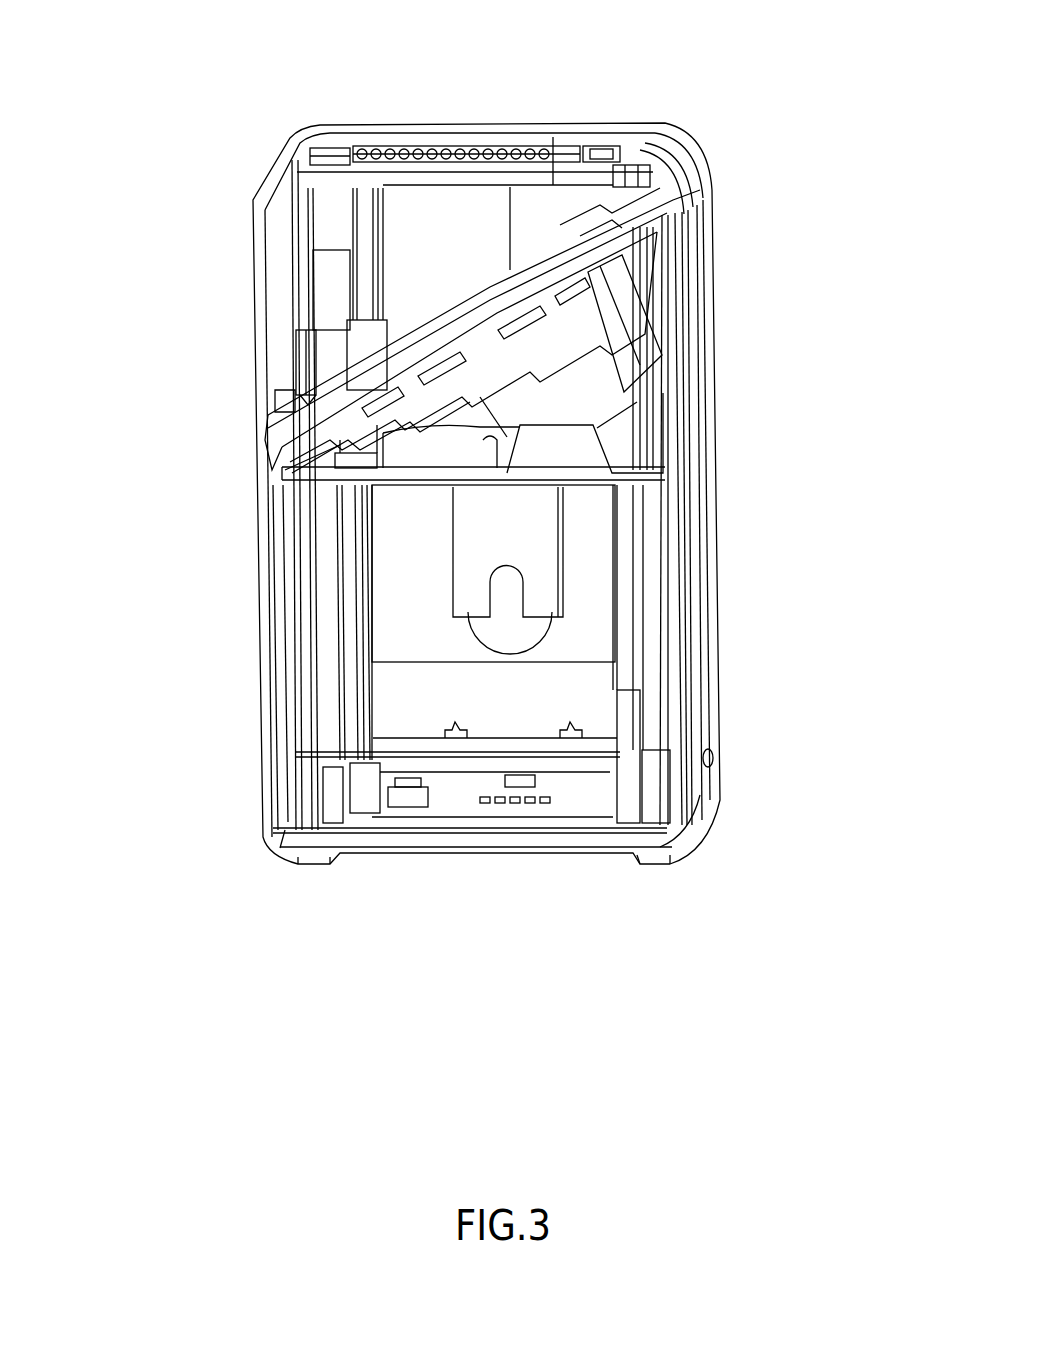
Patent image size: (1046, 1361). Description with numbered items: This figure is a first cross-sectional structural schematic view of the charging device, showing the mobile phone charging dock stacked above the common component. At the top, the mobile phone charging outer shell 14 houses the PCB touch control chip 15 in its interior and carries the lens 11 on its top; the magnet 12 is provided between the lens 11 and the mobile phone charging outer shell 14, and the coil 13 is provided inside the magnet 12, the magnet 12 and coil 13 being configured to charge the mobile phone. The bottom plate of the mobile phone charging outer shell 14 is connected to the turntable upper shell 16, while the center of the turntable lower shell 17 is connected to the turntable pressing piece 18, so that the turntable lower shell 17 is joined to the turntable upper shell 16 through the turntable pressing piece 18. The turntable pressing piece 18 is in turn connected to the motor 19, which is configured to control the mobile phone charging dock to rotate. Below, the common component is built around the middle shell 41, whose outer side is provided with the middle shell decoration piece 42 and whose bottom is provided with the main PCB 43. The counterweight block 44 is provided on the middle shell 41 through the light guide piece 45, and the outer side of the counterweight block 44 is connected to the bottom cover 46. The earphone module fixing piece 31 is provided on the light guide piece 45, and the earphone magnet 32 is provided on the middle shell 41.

The lens 11 is at (460, 138).
The magnet 12 is at (604, 146).
The coil 13 is at (557, 148).
The mobile phone charging outer shell 14 is at (700, 158).
The PCB touch control chip 15 is at (307, 347).
The turntable upper shell 16 is at (310, 424).
The turntable lower shell 17 is at (270, 465).
The turntable pressing piece 18 is at (505, 328).
The motor 19 is at (557, 368).
The earphone module fixing piece 31 is at (565, 700).
The earphone magnet 32 is at (505, 625).
The middle shell 41 is at (305, 688).
The middle shell decoration piece 42 is at (715, 578).
The main PCB 43 is at (575, 755).
The counterweight block 44 is at (391, 840).
The light guide piece 45 is at (452, 812).
The bottom cover 46 is at (470, 862).